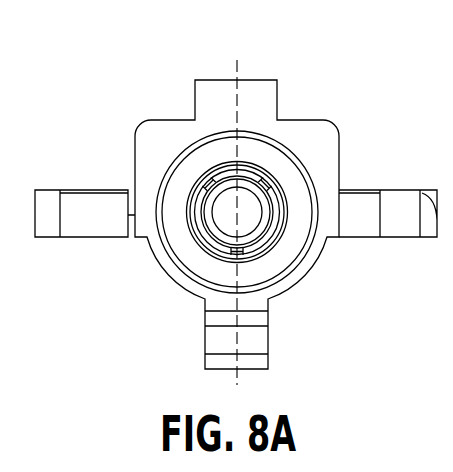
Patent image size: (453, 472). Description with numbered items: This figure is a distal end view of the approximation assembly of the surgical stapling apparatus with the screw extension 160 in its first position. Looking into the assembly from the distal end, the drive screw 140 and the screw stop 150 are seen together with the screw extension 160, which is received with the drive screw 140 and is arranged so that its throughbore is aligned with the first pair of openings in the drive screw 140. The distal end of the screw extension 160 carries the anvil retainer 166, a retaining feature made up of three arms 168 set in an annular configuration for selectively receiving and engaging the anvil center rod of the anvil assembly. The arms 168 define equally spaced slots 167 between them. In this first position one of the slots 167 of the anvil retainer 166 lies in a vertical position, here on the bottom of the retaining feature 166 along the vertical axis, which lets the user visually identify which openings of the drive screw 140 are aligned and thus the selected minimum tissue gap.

The drive screw 140 is at (289, 148).
The screw stop 150 is at (130, 183).
The screw extension 160 is at (210, 260).
The anvil retainer 166 is at (195, 251).
The slots 167 is at (240, 253).
The arms 168 is at (277, 212).